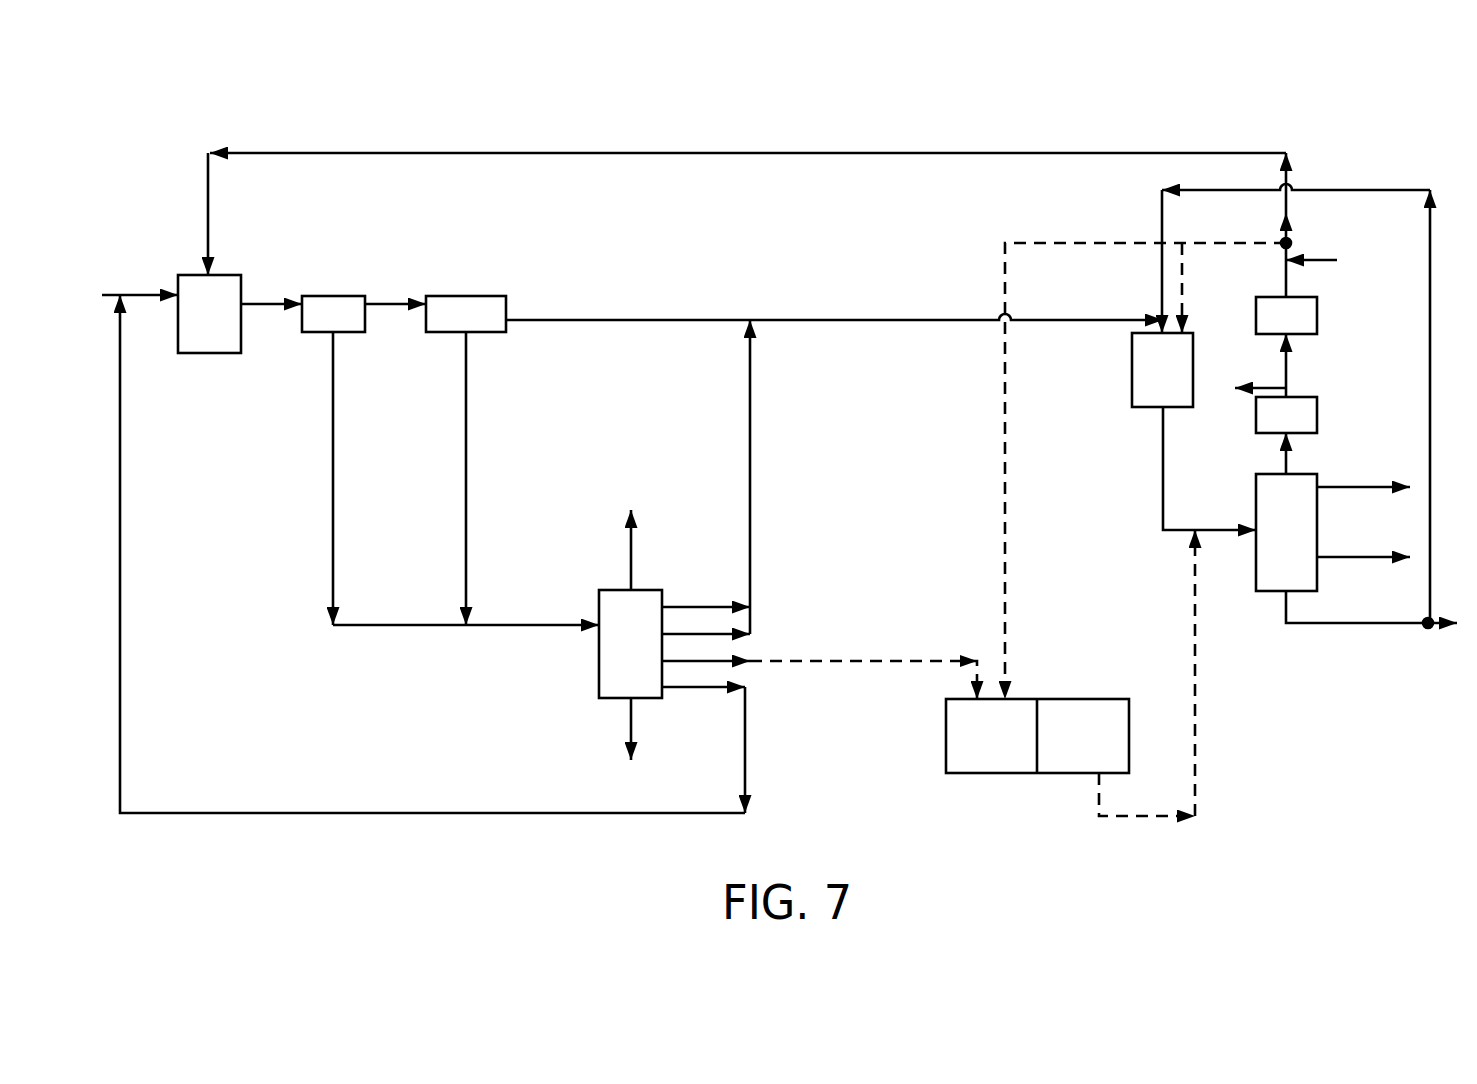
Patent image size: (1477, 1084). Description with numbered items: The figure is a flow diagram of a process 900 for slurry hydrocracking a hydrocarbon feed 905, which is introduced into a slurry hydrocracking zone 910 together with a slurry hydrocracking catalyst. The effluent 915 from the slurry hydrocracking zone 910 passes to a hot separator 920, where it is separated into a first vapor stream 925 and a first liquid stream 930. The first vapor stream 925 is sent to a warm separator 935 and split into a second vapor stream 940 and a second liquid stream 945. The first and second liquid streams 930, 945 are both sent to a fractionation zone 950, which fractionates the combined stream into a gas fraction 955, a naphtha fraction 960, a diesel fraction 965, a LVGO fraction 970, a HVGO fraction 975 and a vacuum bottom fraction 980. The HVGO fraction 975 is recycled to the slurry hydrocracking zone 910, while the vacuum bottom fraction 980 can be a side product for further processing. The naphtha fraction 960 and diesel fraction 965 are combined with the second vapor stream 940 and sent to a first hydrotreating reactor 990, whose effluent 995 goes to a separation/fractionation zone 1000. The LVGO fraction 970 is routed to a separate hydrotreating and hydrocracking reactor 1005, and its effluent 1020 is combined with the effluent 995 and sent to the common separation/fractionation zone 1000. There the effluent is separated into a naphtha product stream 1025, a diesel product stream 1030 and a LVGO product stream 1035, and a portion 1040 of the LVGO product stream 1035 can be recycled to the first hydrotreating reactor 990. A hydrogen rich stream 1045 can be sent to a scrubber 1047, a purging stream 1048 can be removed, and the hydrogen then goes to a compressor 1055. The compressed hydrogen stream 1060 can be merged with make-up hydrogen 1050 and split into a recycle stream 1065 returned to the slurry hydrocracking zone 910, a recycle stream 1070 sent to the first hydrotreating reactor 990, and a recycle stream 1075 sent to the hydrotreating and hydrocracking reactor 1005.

The process 900 is at (178, 129).
The hydrocarbon feed 905 is at (140, 290).
The slurry hydrocracking zone 910 is at (227, 273).
The effluent 915 is at (270, 306).
The hot separator 920 is at (350, 293).
The first vapor stream 925 is at (390, 306).
The first liquid stream 930 is at (332, 431).
The warm separator 935 is at (480, 293).
The second vapor stream 940 is at (578, 323).
The second liquid stream 945 is at (462, 431).
The fractionation zone 950 is at (612, 587).
The gas fraction 955 is at (631, 561).
The naphtha fraction 960 is at (717, 602).
The diesel fraction 965 is at (707, 633).
The LVGO fraction 970 is at (887, 655).
The HVGO fraction 975 is at (745, 756).
The vacuum bottom fraction 980 is at (630, 732).
The first hydrotreating reactor 990 is at (1131, 373).
The effluent 995 is at (1162, 464).
The separation/fractionation zone 1000 is at (1253, 510).
The hydrotreating and hydrocracking reactor 1005 is at (958, 698).
The effluent 1020 is at (1195, 742).
The naphtha product stream 1025 is at (1379, 483).
The diesel product stream 1030 is at (1357, 553).
The LVGO product stream 1035 is at (1364, 624).
The portion of the LVGO product stream 1040 is at (1430, 582).
The hydrogen rich stream 1045 is at (1287, 467).
The scrubber 1047 is at (1255, 406).
The purging stream 1048 is at (1278, 390).
The make-up hydrogen 1050 is at (1328, 261).
The compressor 1055 is at (1305, 297).
The compressed hydrogen stream 1060 is at (1283, 283).
The recycle stream 1065 is at (1237, 152).
The recycle stream 1070 is at (1163, 279).
The recycle stream 1075 is at (1098, 242).